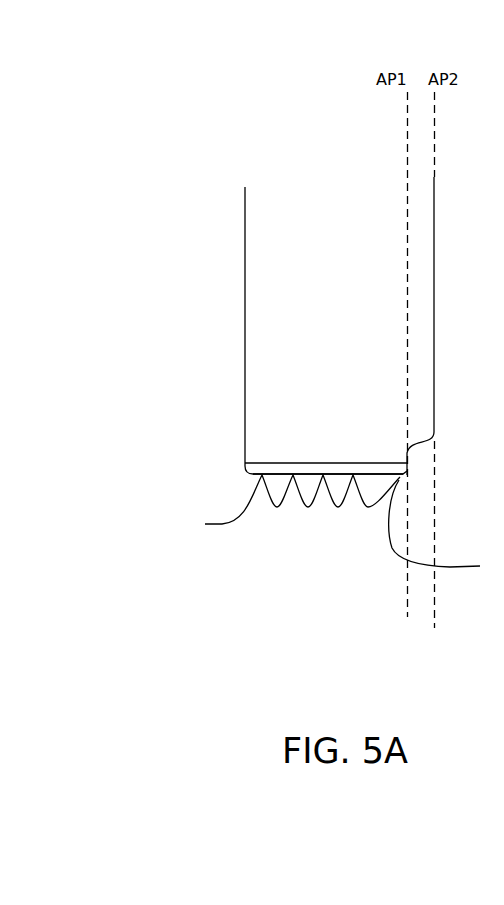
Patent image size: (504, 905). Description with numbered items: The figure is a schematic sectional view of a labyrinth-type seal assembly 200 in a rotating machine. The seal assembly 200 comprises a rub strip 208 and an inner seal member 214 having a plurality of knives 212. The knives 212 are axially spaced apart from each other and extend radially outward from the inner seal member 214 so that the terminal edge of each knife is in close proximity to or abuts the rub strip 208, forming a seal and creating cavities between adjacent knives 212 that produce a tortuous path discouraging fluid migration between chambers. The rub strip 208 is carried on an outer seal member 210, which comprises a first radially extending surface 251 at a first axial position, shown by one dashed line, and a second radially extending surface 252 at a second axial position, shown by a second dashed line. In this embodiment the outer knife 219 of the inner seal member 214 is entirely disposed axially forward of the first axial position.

The seal assembly 200 is at (180, 425).
The rub strip 208 is at (277, 471).
The outer seal member 210 is at (338, 309).
The knives 212 is at (232, 490).
The inner seal member 214 is at (327, 551).
The outer knife 219 is at (395, 488).
The first radially extending surface 251 is at (407, 452).
The second radially extending surface 252 is at (434, 267).